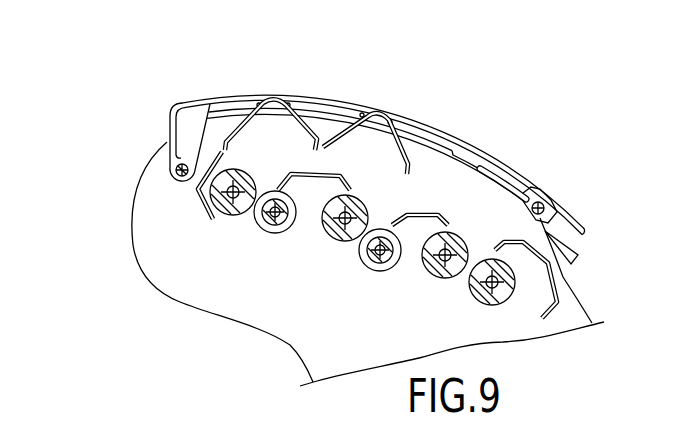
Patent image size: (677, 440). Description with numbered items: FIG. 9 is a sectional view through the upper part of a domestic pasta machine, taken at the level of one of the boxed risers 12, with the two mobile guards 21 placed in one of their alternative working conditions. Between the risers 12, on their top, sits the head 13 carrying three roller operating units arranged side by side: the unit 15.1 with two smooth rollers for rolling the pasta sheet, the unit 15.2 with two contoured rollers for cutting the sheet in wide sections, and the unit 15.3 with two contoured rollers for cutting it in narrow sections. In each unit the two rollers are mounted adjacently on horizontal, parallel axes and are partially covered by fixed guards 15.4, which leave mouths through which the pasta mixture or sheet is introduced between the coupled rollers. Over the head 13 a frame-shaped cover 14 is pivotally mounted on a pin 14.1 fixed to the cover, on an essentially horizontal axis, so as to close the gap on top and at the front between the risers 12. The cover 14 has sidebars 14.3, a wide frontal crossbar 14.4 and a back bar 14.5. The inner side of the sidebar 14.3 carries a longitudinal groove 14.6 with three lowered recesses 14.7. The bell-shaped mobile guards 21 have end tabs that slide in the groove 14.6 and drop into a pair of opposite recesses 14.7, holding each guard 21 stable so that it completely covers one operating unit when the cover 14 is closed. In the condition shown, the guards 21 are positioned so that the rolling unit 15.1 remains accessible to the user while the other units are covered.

The boxed riser 12 is at (150, 263).
The head 13 is at (314, 291).
The cover 14 is at (284, 97).
The pin 14.1 is at (180, 169).
The sidebar 14.3 is at (443, 133).
The frontal crossbar 14.4 is at (566, 213).
The back bar 14.5 is at (176, 108).
The longitudinal groove 14.6 is at (450, 150).
The lowered recess 14.7 is at (469, 167).
The roller operating unit 15.1 is at (436, 285).
The roller operating unit 15.2 is at (329, 252).
The roller operating unit 15.3 is at (224, 220).
The guard 15.4 is at (200, 210).
The mobile guard 21 is at (312, 100).